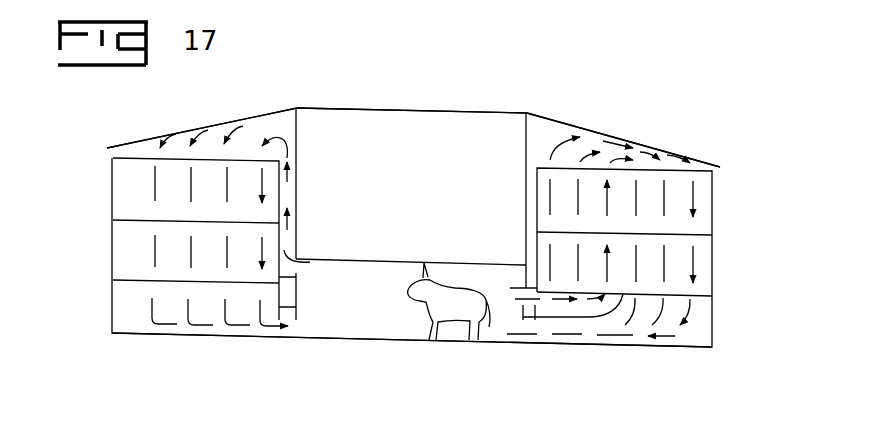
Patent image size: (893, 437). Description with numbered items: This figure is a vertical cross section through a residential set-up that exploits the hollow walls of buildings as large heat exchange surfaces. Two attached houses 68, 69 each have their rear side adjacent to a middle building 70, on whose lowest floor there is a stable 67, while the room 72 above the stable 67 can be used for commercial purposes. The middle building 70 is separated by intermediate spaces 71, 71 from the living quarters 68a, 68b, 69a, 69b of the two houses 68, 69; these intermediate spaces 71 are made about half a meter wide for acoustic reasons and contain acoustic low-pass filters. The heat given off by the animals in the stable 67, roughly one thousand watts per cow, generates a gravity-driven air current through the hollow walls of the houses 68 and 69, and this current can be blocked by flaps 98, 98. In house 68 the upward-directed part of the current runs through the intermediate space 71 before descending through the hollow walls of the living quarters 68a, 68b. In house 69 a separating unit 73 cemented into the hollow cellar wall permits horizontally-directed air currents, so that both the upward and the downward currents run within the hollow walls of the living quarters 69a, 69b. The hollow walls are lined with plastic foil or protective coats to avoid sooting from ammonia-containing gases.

The stable 67 is at (370, 311).
The attached house 68 is at (217, 120).
The living quarters 68a is at (132, 180).
The living quarters 68b is at (132, 238).
The attached house 69 is at (637, 135).
The living quarters 69a is at (692, 223).
The living quarters 69b is at (698, 263).
The middle building 70 is at (430, 107).
The intermediate space 71 is at (293, 185).
The room 72 is at (413, 171).
The separating unit 73 is at (592, 318).
The flap 98 is at (315, 259).